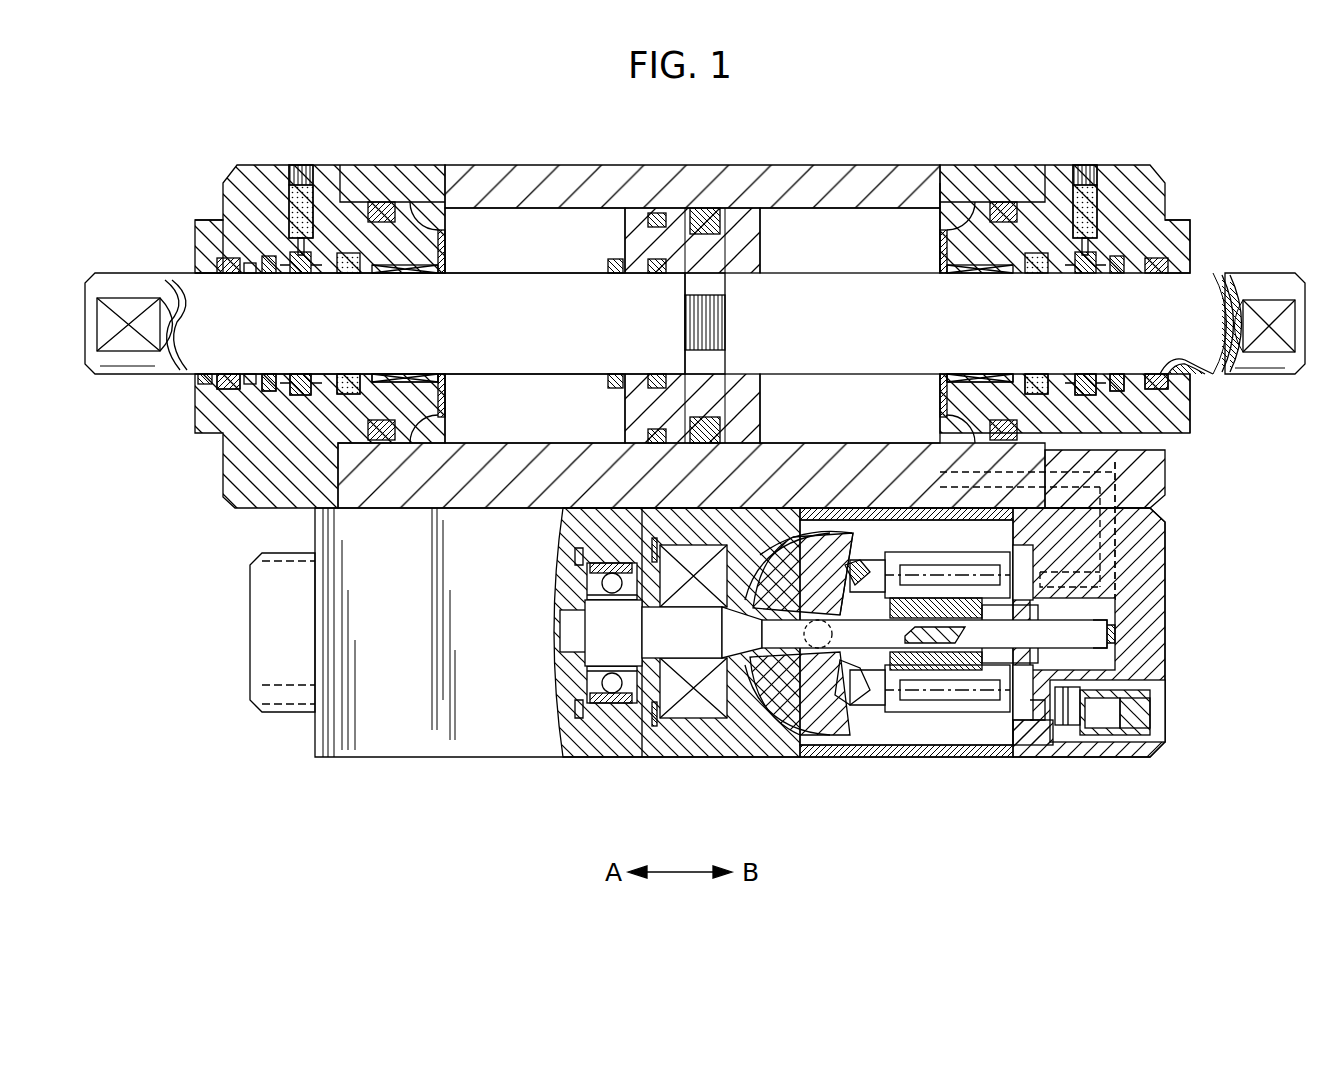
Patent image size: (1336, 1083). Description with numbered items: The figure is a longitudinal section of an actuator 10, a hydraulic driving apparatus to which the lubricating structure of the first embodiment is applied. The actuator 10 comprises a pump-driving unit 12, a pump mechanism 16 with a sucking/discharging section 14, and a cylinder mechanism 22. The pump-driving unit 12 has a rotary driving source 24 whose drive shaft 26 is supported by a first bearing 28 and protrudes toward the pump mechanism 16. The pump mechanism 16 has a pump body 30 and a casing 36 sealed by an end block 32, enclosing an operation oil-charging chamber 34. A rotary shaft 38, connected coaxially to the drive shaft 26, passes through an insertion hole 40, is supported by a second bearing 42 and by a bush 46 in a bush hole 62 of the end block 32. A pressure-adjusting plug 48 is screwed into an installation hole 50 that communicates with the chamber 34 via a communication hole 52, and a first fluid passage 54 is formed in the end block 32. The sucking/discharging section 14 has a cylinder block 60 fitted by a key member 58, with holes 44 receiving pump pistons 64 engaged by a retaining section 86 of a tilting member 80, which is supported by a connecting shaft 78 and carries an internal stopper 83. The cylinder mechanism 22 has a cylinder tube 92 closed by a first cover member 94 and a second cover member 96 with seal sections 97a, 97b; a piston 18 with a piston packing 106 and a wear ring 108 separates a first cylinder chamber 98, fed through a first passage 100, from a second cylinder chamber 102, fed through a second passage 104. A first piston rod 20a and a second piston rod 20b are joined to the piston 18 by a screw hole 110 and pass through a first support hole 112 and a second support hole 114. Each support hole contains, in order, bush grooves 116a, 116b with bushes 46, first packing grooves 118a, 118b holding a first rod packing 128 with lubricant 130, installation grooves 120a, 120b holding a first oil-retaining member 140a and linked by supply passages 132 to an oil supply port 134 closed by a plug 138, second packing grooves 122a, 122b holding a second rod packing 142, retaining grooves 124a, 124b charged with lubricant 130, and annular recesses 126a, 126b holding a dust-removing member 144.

The actuator 10 is at (999, 113).
The pump-driving unit 12 is at (312, 734).
The sucking/discharging section 14 is at (940, 710).
The pump mechanism 16 is at (1168, 618).
The piston 18 is at (762, 250).
The first piston rod 20a is at (1205, 283).
The second piston rod 20b is at (118, 367).
The cylinder mechanism 22 is at (250, 163).
The rotary driving source 24 is at (422, 757).
The drive shaft 26 is at (565, 630).
The first bearing 28 is at (612, 705).
The pump body 30 is at (748, 757).
The end block 32 is at (1115, 575).
The operation oil-charging chamber 34 is at (845, 722).
The casing 36 is at (1030, 745).
The rotary shaft 38 is at (1090, 635).
The insertion hole 40 is at (785, 735).
The second bearing 42 is at (690, 710).
The holes 44 is at (968, 570).
The bush 46 is at (405, 276).
The pressure-adjusting plug 48 is at (1148, 710).
The installation hole 50 is at (1150, 725).
The communication hole 52 is at (1040, 720).
The first fluid passage 54 is at (1165, 512).
The key member 58 is at (925, 636).
The cylinder block 60 is at (905, 700).
The bush hole 62 is at (1115, 640).
The pump pistons 64 is at (915, 568).
The connecting shaft 78 is at (805, 620).
The tilting member 80 is at (805, 535).
The internal stopper 83 is at (852, 535).
The retaining section 86 is at (860, 568).
The cylinder tube 92 is at (822, 185).
The first cover member 94 is at (1150, 200).
The second cover member 96 is at (228, 465).
The seal section 97a is at (1130, 200).
The seal section 97b is at (280, 205).
The first cylinder chamber 98 is at (912, 230).
The first passage 100 is at (900, 450).
The second cylinder chamber 102 is at (520, 240).
The second passage 104 is at (478, 470).
The piston packing 106 is at (705, 208).
The wear ring 108 is at (656, 212).
The screw hole 110 is at (722, 300).
The first support hole 112 is at (1178, 380).
The second support hole 114 is at (200, 265).
The bush groove 116a is at (980, 380).
The bush groove 116b is at (408, 380).
The first packing groove 118a is at (1035, 387).
The first packing groove 118b is at (355, 387).
The installation groove 120a is at (1084, 387).
The installation groove 120b is at (303, 387).
The second packing groove 122a is at (1118, 387).
The second packing groove 122b is at (266, 387).
The retaining groove 124a is at (1160, 385).
The retaining groove 124b is at (230, 385).
The annular recess 126a is at (1187, 376).
The annular recess 126b is at (205, 384).
The first rod packing 128 is at (350, 275).
The lubricant 130 is at (303, 250).
The supply passages 132 is at (290, 240).
The oil supply port 134 is at (290, 200).
The plug 138 is at (300, 165).
The first oil-retaining member 140a is at (300, 275).
The second rod packing 142 is at (268, 275).
The dust-removing member 144 is at (230, 275).